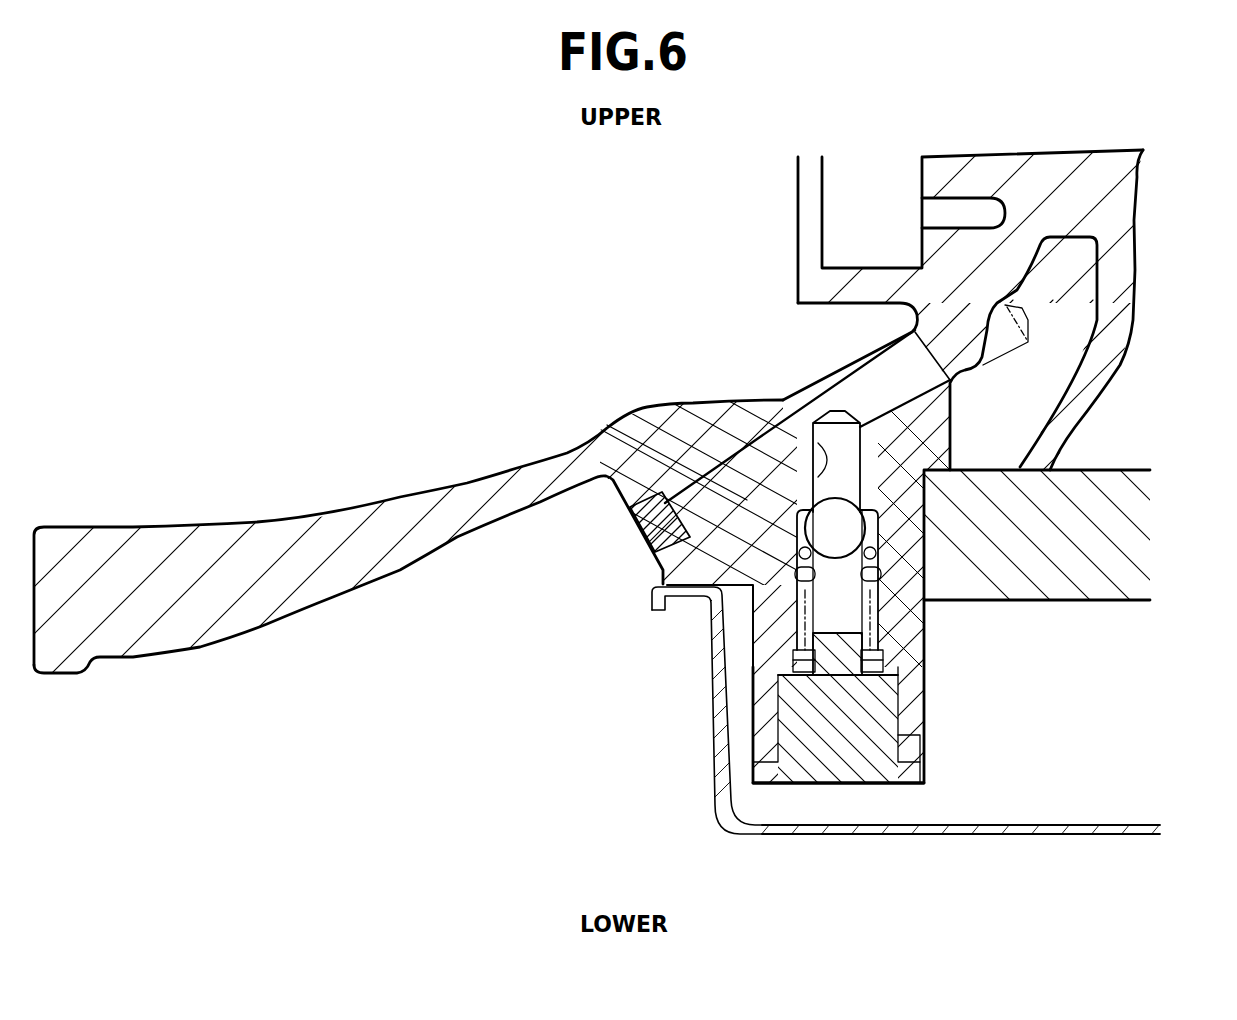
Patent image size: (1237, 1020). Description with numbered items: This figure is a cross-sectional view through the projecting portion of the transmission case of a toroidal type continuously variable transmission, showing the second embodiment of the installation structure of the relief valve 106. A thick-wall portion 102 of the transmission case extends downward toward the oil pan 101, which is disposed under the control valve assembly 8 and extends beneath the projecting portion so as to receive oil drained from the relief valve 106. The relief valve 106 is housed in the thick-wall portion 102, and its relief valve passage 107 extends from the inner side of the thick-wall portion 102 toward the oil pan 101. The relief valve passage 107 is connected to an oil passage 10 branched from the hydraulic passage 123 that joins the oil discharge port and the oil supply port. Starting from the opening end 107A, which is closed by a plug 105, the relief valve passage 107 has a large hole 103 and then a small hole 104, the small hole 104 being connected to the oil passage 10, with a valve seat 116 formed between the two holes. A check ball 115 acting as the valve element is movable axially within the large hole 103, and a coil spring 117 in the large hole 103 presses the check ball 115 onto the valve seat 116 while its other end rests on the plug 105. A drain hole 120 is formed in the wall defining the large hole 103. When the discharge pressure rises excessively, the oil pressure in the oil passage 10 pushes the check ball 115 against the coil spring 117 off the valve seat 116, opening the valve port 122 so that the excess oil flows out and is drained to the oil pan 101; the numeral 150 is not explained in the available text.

The lever body 150 is at (422, 472).
The oil passage 10 is at (677, 403).
The coil spring 117 is at (613, 423).
The check ball 115 is at (745, 462).
The small hole 104 is at (793, 422).
The valve port 122 is at (733, 403).
The hydraulic passage 123 is at (1070, 310).
The control valve assembly 8 is at (1090, 585).
The drain hole 120 is at (907, 640).
The thick-wall portion 102 is at (915, 710).
The opening end 107A is at (905, 737).
The large hole 103 is at (795, 575).
The oil pan 101 is at (930, 832).
The valve seat 116 is at (877, 523).
The relief valve passage 107 is at (830, 605).
The relief valve 106 is at (780, 712).
The plug 105 is at (795, 786).